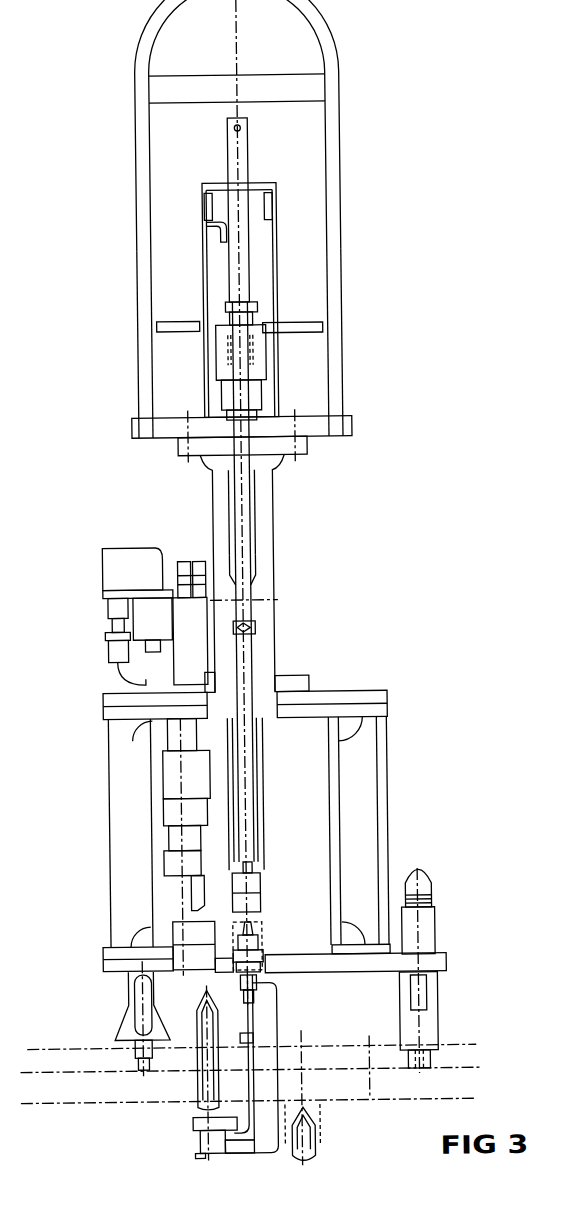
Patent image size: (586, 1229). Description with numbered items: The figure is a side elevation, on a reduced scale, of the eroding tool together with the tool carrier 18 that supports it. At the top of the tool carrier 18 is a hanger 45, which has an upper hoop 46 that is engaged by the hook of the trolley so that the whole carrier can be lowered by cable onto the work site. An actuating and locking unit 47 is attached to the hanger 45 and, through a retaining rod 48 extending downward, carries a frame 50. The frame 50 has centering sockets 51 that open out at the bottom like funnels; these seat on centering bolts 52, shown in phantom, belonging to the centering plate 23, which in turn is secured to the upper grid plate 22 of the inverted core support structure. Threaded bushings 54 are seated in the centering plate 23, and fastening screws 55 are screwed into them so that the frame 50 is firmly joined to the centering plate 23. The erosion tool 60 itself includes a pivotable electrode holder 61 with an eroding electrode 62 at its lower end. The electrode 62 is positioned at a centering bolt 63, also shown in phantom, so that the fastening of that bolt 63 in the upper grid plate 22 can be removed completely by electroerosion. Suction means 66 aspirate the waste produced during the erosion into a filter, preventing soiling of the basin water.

The tool carrier 18 is at (350, 522).
The upper grid plate 22 is at (55, 1090).
The centering plate 23 is at (34, 1056).
The hanger 45 is at (335, 211).
The upper hoop 46 is at (339, 38).
The actuating and locking unit 47 is at (300, 328).
The retaining rod 48 is at (270, 628).
The frame 50 is at (413, 777).
The centering sockets 51 is at (109, 1034).
The centering bolts 52 is at (127, 1002).
The threaded bushings 54 is at (421, 1015).
The fastening screws 55 is at (416, 893).
The erosion tool 60 is at (303, 935).
The pivotable electrode holder 61 is at (259, 1024).
The eroding electrode 62 is at (184, 1134).
The centering bolt 63 is at (190, 1049).
The suction means 66 is at (273, 1108).